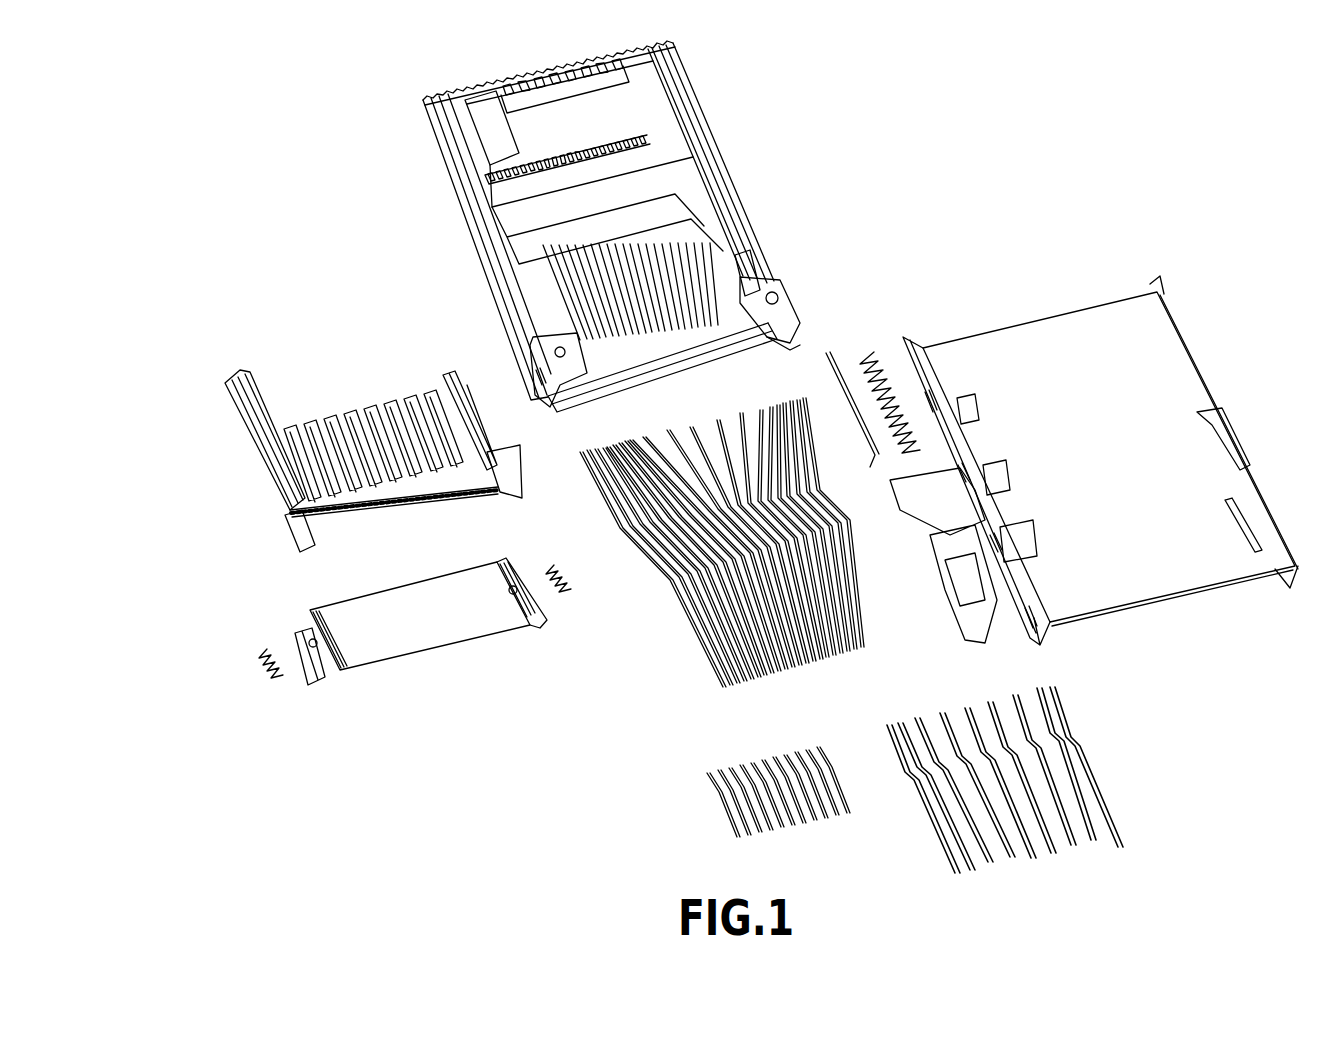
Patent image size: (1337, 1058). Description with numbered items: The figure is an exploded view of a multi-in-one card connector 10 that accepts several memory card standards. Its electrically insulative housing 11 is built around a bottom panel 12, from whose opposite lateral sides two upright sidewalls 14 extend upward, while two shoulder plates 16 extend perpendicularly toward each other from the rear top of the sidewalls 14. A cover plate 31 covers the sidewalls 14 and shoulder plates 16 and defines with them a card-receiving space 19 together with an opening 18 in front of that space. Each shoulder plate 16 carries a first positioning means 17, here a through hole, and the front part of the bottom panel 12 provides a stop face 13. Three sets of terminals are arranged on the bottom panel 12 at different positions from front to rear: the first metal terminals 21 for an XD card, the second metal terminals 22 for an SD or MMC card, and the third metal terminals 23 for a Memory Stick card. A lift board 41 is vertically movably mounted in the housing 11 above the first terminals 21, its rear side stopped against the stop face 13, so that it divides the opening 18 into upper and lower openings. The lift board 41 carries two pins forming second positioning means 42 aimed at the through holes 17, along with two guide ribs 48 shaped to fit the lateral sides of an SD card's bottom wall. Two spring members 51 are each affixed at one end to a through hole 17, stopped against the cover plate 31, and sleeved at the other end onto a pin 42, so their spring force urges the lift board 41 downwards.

The multi-in-one card connector 10 is at (240, 541).
The housing 11 is at (478, 268).
The bottom panel 12 is at (672, 378).
The stop face 13 is at (730, 290).
The upright sidewalls 14 is at (520, 340).
The shoulder plates 16 is at (570, 366).
The first positioning means 17 is at (554, 353).
The opening 18 is at (723, 348).
The card-receiving space 19 is at (660, 185).
The first metal terminals 21 is at (706, 672).
The second metal terminals 22 is at (1095, 762).
The third metal terminals 23 is at (720, 803).
The cover plate 31 is at (1026, 325).
The lift board 41 is at (308, 686).
The second positioning means 42 is at (305, 632).
The guide ribs 48 is at (345, 656).
The spring members 51 is at (262, 665).